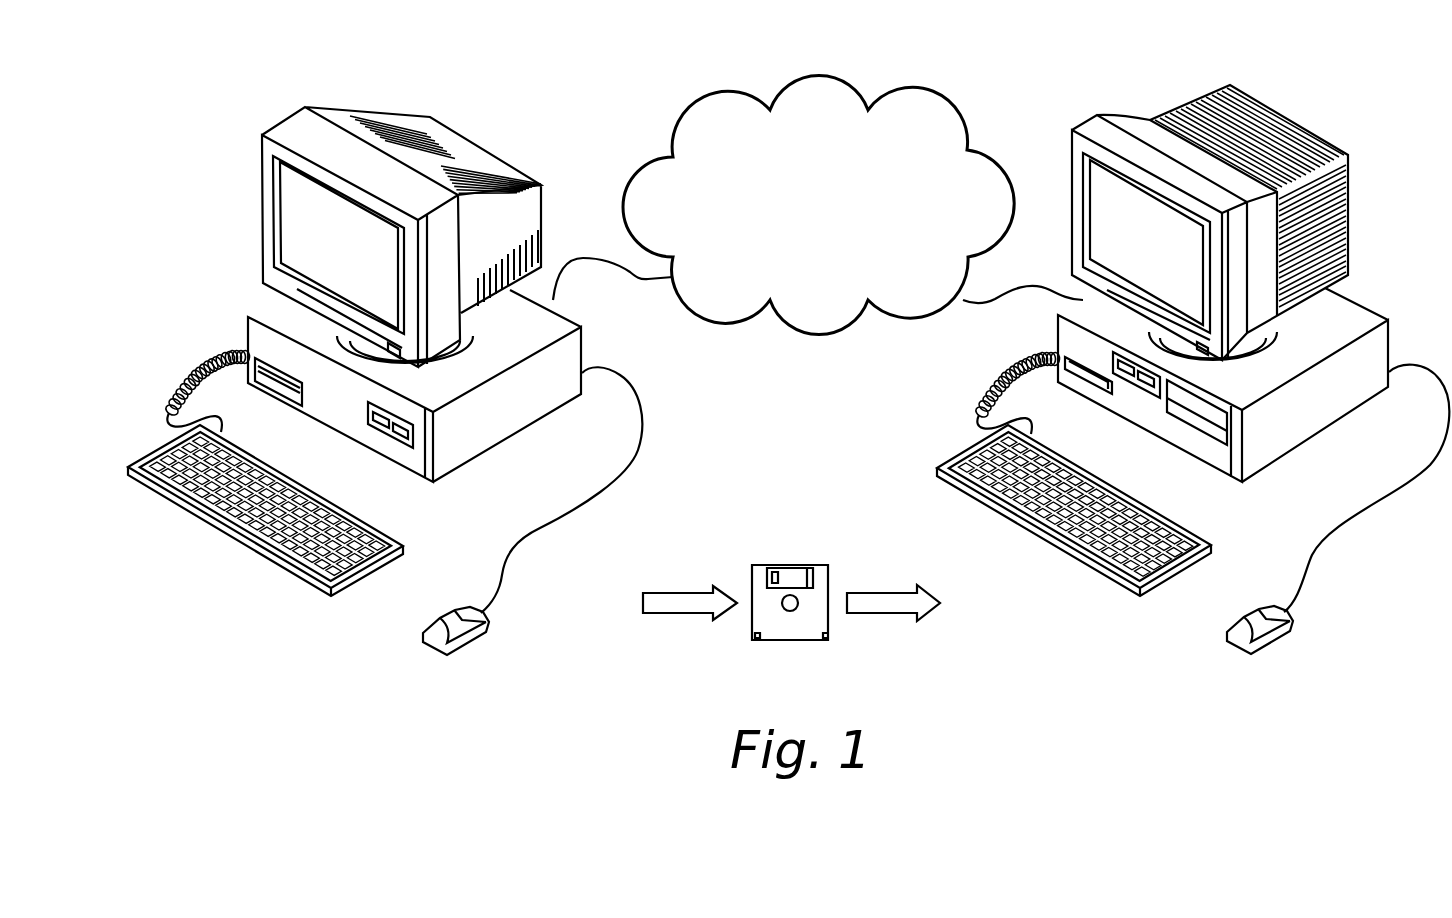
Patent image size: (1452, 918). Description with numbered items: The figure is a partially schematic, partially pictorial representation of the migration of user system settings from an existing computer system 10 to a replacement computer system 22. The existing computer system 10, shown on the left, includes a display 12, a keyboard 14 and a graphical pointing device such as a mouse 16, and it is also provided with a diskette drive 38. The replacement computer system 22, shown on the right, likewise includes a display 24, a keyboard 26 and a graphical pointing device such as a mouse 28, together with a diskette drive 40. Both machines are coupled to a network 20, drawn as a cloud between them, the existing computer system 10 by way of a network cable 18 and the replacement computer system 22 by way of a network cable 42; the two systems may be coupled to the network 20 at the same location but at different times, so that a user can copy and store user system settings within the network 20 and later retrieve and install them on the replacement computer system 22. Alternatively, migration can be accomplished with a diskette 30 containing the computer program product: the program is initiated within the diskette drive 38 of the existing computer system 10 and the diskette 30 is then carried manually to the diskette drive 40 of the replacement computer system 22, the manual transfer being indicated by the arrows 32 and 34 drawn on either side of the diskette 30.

The existing computer system 10 is at (247, 335).
The display 12 is at (261, 204).
The keyboard 14 is at (220, 530).
The mouse 16 is at (470, 645).
The network cable 18 is at (641, 284).
The network 20 is at (962, 118).
The replacement computer system 22 is at (1311, 440).
The display 24 is at (1349, 212).
The keyboard 26 is at (1030, 533).
The mouse 28 is at (1277, 643).
The diskette 30 is at (802, 565).
The arrow 32 is at (675, 613).
The arrow 34 is at (883, 613).
The diskette drive 38 is at (388, 425).
The diskette drive 40 is at (1136, 380).
The network cable 42 is at (984, 304).